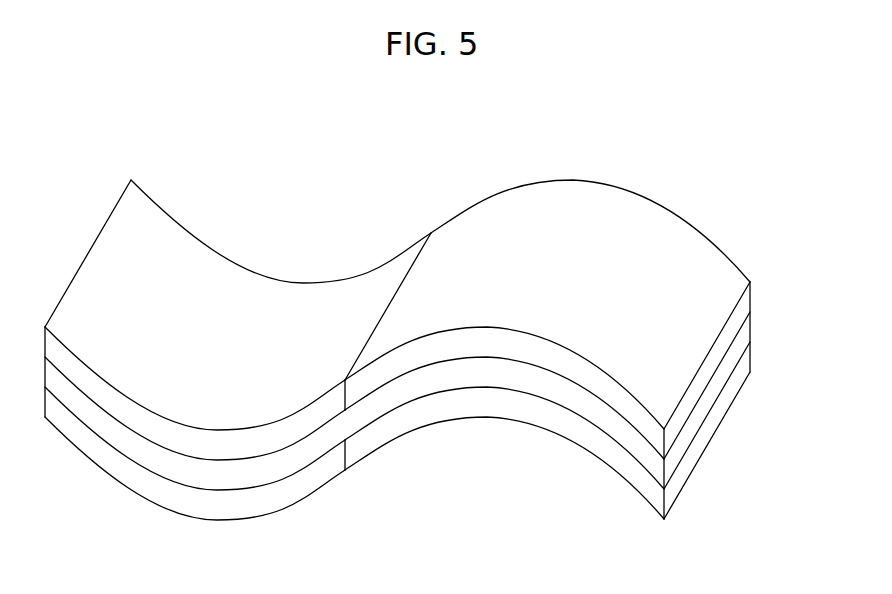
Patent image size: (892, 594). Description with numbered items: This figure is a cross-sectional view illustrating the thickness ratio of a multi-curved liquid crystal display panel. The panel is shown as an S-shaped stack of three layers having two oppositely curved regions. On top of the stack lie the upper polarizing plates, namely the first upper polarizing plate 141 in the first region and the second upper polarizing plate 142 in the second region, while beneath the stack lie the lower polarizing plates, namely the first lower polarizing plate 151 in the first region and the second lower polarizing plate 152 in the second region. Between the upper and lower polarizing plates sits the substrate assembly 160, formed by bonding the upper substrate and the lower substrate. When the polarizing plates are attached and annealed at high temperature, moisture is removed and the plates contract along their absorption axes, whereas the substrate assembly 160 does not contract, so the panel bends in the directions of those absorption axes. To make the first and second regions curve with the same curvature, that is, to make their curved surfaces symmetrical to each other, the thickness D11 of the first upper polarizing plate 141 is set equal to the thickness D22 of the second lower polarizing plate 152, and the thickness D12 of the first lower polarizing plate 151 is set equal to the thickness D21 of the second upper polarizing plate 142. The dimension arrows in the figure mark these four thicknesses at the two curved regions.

The first upper polarizing plate 141 is at (160, 207).
The second upper polarizing plate 142 is at (690, 223).
The first lower polarizing plate 151 is at (67, 441).
The second lower polarizing plate 152 is at (640, 493).
The substrate assembly 160 is at (752, 328).
The thickness of the first upper polarizing plate D11 is at (185, 427).
The thickness of the first lower polarizing plate D12 is at (185, 487).
The thickness of the second upper polarizing plate D21 is at (505, 330).
The thickness of the second lower polarizing plate D22 is at (505, 390).